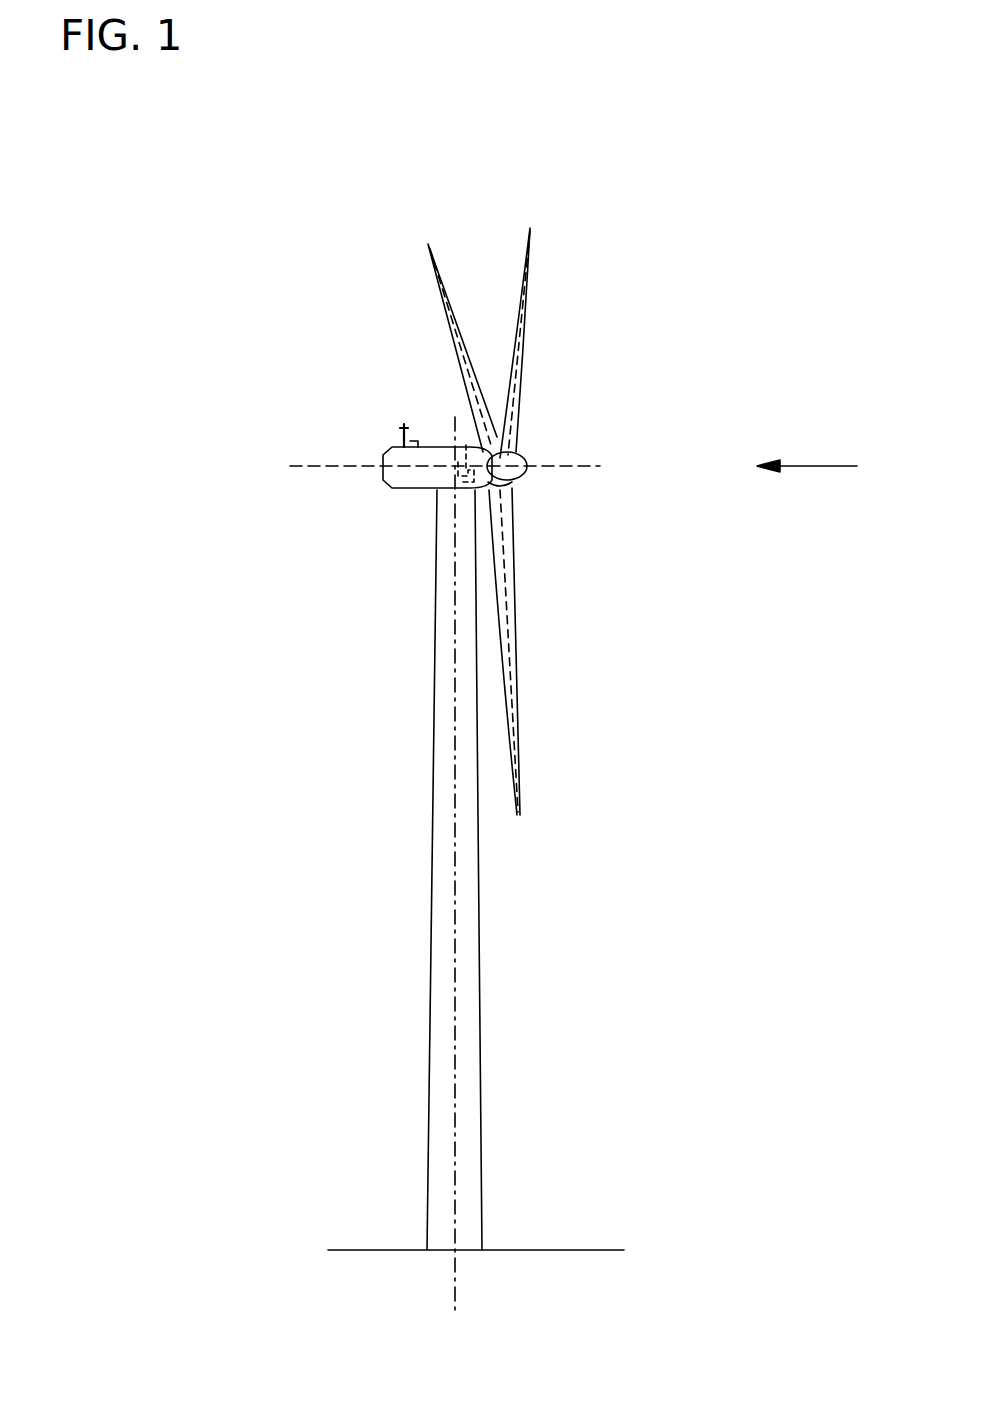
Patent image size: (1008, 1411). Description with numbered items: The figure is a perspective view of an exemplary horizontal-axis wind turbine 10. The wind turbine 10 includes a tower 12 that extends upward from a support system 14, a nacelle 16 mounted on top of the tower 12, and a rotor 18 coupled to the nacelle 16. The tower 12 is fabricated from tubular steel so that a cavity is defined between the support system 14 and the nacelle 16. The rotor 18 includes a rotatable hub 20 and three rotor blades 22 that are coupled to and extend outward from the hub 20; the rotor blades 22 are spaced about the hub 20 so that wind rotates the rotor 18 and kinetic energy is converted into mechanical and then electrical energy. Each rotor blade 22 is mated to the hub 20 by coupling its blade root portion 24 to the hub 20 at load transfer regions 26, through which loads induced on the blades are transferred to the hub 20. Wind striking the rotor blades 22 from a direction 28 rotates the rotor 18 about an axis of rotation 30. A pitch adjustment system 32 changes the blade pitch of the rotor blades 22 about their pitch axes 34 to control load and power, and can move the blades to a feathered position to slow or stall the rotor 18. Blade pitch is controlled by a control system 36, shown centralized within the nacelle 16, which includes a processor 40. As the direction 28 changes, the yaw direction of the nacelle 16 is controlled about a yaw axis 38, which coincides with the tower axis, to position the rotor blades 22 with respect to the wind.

The wind turbine 10 is at (215, 250).
The tower 12 is at (430, 1022).
The support system 14 is at (385, 1250).
The nacelle 16 is at (412, 486).
The rotor 18 is at (533, 369).
The rotatable hub 20 is at (522, 457).
The rotor blade 22 is at (448, 310).
The blade root portion 24 is at (512, 572).
The load transfer region 26 is at (512, 486).
The direction 28 is at (828, 465).
The axis of rotation 30 is at (600, 470).
The pitch adjustment system 32 is at (500, 500).
The pitch axis 34 is at (426, 245).
The control system 36 is at (457, 487).
The yaw axis 38 is at (455, 905).
The processor 40 is at (466, 445).